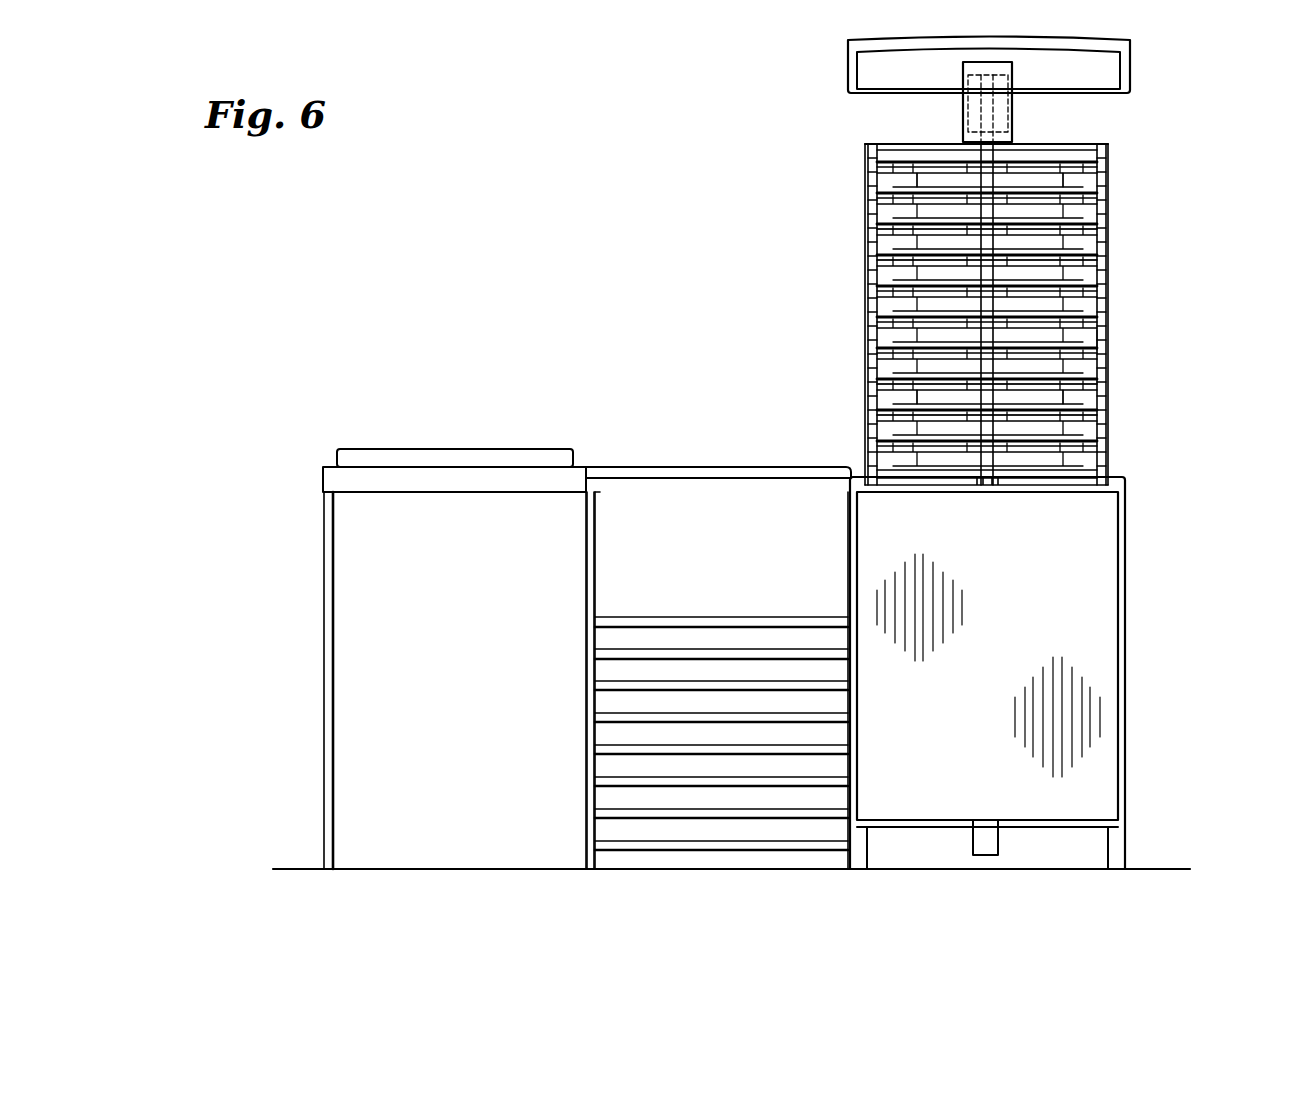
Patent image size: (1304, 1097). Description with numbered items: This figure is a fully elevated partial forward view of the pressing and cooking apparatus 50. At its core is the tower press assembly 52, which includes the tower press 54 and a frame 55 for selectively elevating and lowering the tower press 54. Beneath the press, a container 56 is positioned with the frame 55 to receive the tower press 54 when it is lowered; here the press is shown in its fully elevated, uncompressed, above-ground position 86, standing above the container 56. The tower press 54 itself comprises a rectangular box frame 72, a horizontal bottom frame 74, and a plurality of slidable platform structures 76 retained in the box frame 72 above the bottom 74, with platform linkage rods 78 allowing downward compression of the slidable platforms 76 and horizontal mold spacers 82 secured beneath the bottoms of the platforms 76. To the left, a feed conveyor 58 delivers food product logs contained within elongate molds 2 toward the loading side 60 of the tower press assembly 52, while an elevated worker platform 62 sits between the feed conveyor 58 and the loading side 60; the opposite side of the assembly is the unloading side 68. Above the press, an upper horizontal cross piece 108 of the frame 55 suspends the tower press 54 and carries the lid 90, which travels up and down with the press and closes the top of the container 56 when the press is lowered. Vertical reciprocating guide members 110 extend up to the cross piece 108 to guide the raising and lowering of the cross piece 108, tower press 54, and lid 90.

The elongate molds 2 is at (391, 452).
The pressing and cooking apparatus 50 is at (961, 321).
The tower press assembly 52 is at (1130, 357).
The tower press 54 is at (1108, 211).
The frame 55 is at (1128, 570).
The container 56 is at (1128, 728).
The feed conveyor 58 is at (330, 478).
The loading side 60 is at (872, 343).
The elevated worker platform 62 is at (674, 618).
The unloading side 68 is at (1100, 340).
The rectangular box frame 72 is at (868, 205).
The horizontal bottom frame 74 is at (1020, 478).
The slidable frames or platform structures 76 is at (880, 277).
The platform linkage rods or bars 78 is at (867, 425).
The horizontal mold spacers 82 is at (922, 200).
The fully elevated, uncompressed, above-ground position 86 is at (843, 305).
The lid 90 is at (1058, 45).
The upper horizontal cross piece 108 is at (968, 70).
The vertical reciprocating guide members 110 is at (995, 112).